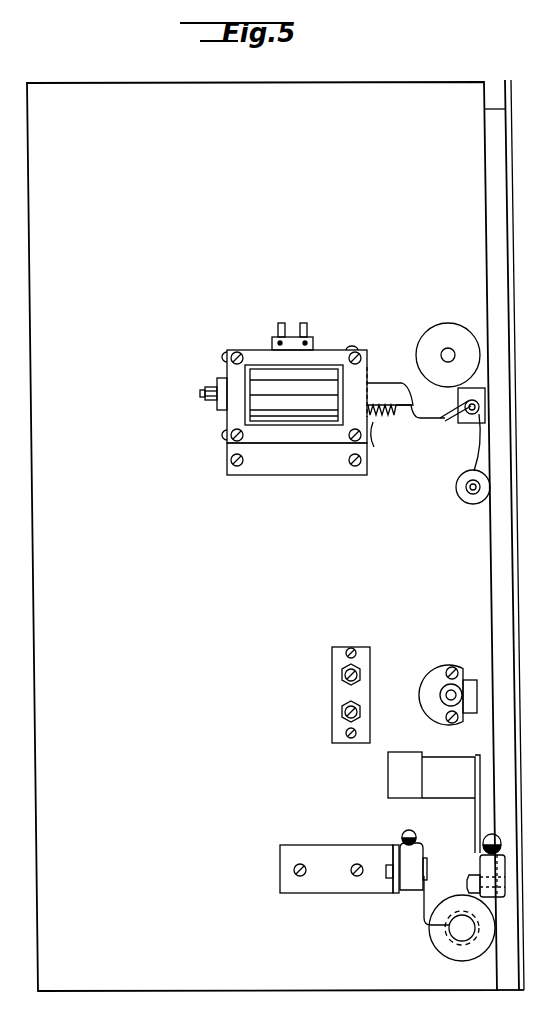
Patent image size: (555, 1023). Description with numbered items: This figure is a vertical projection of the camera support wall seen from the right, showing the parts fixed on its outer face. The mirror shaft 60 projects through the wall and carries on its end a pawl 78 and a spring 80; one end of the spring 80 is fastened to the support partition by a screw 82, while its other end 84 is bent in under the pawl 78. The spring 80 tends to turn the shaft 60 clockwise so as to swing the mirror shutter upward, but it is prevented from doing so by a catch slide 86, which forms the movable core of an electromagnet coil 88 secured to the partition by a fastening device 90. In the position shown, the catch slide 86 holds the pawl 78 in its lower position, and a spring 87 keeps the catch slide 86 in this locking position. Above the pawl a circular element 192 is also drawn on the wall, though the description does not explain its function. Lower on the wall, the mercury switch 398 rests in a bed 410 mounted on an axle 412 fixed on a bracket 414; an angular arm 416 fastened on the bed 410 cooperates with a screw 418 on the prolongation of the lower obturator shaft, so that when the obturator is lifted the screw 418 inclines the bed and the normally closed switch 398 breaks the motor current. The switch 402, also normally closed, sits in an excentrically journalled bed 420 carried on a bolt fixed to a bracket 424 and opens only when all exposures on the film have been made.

The mirror shaft 60 is at (460, 417).
The pawl 78 is at (411, 416).
The spring 80 is at (470, 424).
The screw 82 is at (470, 491).
The other end of spring 84 is at (440, 418).
The catch slide 86 is at (383, 392).
The spring 87 is at (383, 444).
The electromagnet coil 88 is at (263, 375).
The fastening device 90 is at (324, 450).
The disc 192 is at (433, 393).
The mercury switch 398 is at (405, 832).
The switch 402 is at (484, 843).
The bed 410 is at (411, 890).
The axle 412 is at (387, 866).
The bracket 414 is at (393, 886).
The angular arm 416 is at (424, 916).
The screw 418 is at (455, 936).
The bed 420 is at (483, 866).
The bracket 424 is at (478, 812).